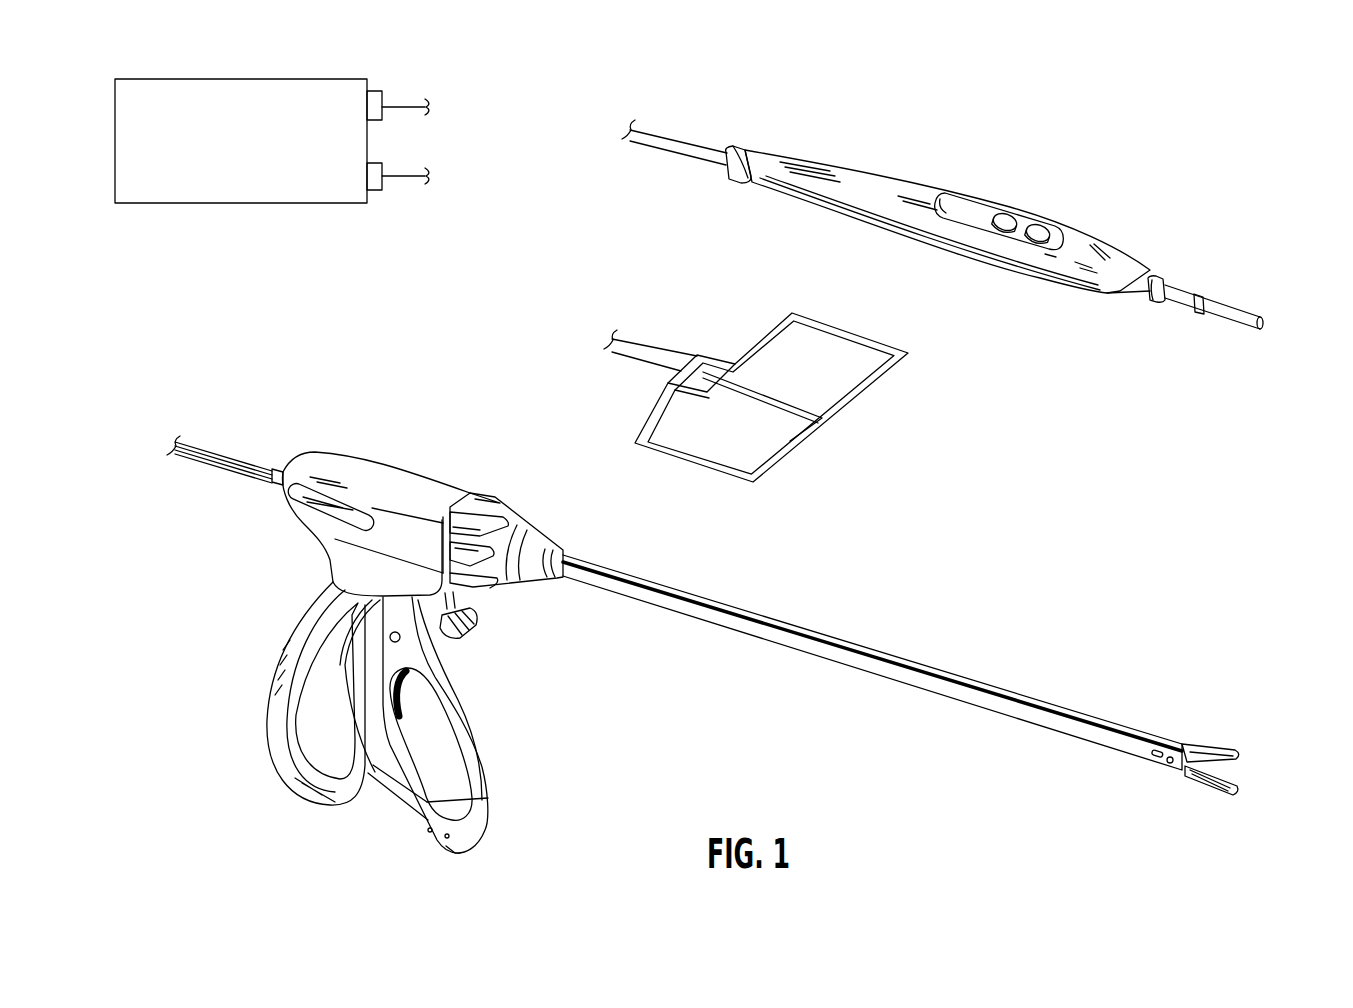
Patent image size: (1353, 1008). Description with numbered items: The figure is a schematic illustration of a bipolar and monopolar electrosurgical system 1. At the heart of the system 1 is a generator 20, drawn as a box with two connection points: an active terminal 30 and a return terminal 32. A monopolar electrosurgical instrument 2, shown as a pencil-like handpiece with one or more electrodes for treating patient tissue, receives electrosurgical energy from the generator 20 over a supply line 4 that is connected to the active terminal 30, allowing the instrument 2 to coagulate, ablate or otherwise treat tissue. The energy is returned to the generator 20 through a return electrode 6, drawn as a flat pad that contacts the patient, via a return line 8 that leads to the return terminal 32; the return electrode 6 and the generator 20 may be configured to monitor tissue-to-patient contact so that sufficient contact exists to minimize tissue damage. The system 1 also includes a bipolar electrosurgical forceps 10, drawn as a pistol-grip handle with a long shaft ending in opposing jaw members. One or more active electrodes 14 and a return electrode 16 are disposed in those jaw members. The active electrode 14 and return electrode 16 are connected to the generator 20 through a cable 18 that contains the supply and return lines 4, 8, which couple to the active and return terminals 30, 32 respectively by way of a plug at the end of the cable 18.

The electrosurgical system 1 is at (1030, 115).
The monopolar electrosurgical instrument 2 is at (1087, 248).
The supply line 4 is at (675, 135).
The return electrode 6 is at (683, 465).
The return line 8 is at (635, 345).
The bipolar electrosurgical forceps 10 is at (773, 634).
The active electrode 14 is at (1232, 766).
The return electrode 16 is at (1238, 779).
The cable 18 is at (250, 462).
The generator 20 is at (245, 79).
The active terminal 30 is at (376, 91).
The return terminal 32 is at (376, 190).